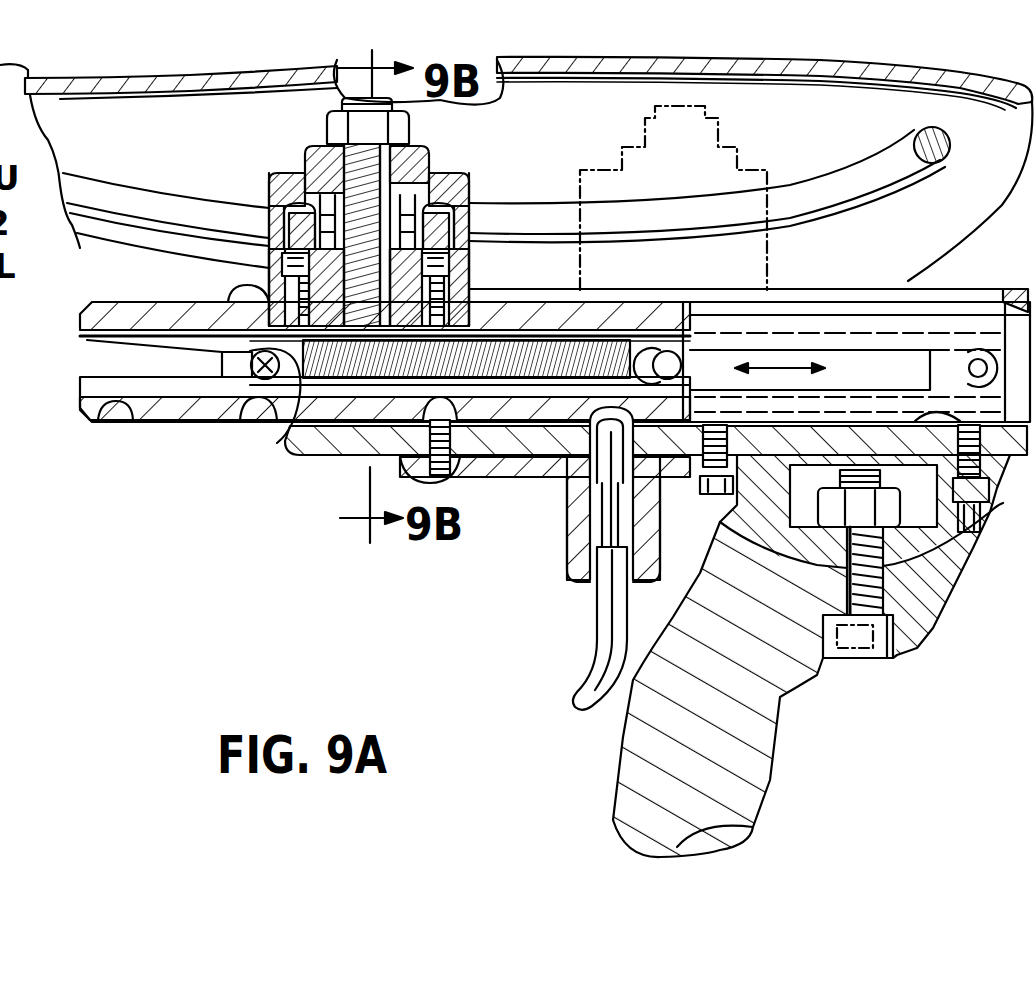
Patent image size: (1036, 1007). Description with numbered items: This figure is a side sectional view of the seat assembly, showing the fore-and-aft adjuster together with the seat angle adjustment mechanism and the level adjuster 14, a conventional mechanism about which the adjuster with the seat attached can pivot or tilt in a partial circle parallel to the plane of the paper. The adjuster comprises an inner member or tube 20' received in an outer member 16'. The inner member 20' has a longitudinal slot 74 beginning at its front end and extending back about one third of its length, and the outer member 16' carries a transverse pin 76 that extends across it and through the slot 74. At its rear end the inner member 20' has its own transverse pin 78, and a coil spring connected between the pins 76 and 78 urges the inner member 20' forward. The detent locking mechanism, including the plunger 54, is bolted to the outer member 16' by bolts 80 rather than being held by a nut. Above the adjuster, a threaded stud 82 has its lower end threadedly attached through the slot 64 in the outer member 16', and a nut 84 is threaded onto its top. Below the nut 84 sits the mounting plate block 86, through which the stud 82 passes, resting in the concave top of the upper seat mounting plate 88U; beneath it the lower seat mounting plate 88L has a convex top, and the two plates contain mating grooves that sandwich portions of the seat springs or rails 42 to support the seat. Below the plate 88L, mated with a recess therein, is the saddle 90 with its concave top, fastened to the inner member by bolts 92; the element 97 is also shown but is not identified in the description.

The level adjuster 14 is at (984, 523).
The outer member 16' is at (653, 470).
The inner member or tube 20' is at (385, 437).
The seat springs or rails 42 is at (830, 187).
The plunger 54 is at (593, 467).
The slot 64 is at (947, 297).
The longitudinal slot 74 is at (112, 365).
The transverse pin 76 is at (287, 425).
The transverse pin 78 is at (657, 330).
The bolts 80 is at (455, 478).
The threaded stud 82 is at (457, 183).
The nut 84 is at (328, 135).
The mounting plate block 86 is at (417, 152).
The upper seat mounting plate 88U is at (270, 178).
The lower seat mounting plate 88L is at (269, 230).
The saddle 90 is at (265, 270).
The bolts 92 is at (469, 273).
The boss 97 is at (253, 297).